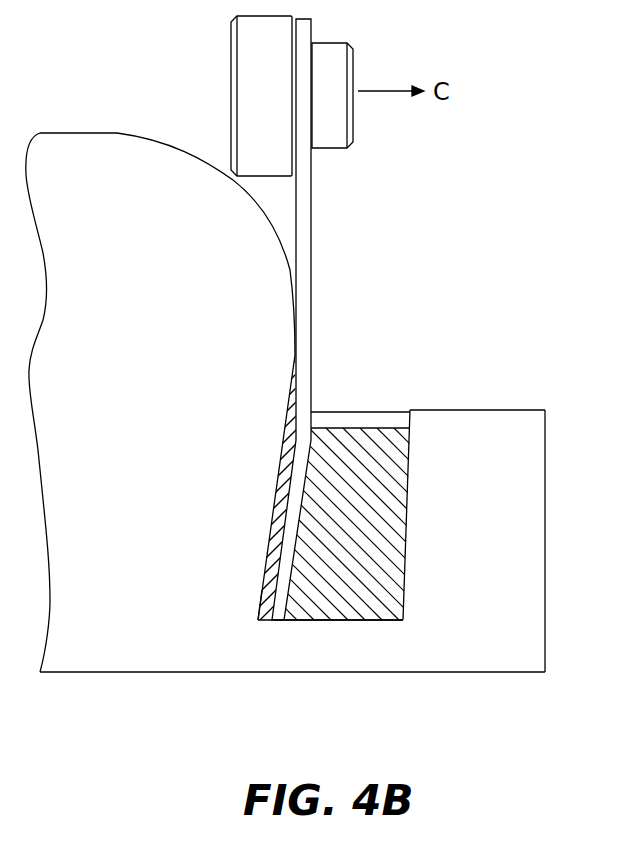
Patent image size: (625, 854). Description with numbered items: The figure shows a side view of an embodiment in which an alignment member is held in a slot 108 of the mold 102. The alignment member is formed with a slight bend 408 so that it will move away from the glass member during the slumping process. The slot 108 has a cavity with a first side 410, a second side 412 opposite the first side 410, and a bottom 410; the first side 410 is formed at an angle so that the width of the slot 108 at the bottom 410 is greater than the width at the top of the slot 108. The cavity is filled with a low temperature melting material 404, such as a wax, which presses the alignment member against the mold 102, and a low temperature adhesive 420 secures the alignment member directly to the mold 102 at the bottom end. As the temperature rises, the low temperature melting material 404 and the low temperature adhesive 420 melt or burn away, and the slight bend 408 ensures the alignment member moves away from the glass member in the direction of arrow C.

The mold 102 is at (196, 407).
The slot 108 is at (382, 417).
The low temperature melting material 404 is at (350, 597).
The slight bend 408 is at (311, 223).
The first side 410 is at (270, 511).
The second side 412 is at (410, 503).
The low temperature adhesive 420 is at (268, 573).